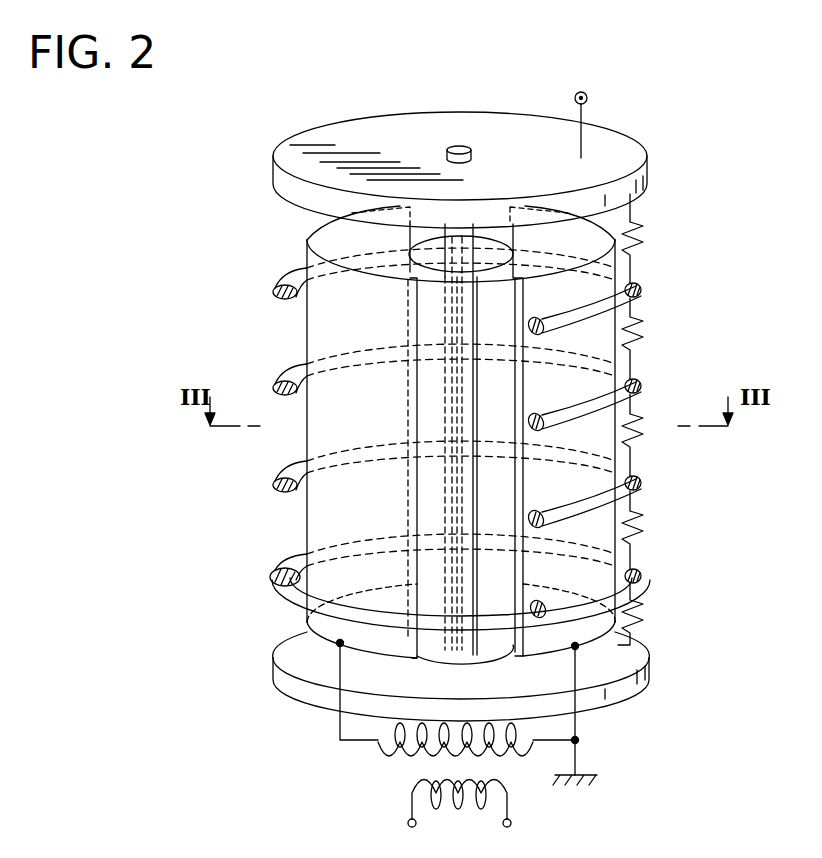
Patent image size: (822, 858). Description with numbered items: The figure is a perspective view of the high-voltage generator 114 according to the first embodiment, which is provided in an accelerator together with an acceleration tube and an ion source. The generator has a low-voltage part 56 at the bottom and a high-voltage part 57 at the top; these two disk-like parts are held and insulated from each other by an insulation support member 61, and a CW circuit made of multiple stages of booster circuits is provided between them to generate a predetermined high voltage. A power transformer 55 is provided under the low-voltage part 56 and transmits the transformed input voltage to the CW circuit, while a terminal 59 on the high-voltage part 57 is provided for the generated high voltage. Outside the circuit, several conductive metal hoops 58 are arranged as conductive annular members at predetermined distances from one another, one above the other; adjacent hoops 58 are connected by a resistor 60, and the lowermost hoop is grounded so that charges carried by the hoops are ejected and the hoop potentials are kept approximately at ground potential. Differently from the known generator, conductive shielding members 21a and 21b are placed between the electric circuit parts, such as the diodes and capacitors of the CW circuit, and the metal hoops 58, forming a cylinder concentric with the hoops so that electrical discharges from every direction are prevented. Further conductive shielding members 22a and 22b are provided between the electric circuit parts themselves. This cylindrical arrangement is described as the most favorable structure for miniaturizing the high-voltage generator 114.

The high-voltage generator 114 is at (517, 96).
The high-voltage part 57 is at (397, 127).
The insulation support member 61 is at (460, 146).
The terminal 59 is at (588, 98).
The conductive shielding member 21a is at (640, 312).
The conductive shielding member 21b is at (305, 335).
The conductive shielding member 22a is at (615, 238).
The conductive shielding member 22b is at (307, 240).
The conductive metal hoop 58 is at (640, 290).
The resistor 60 is at (636, 240).
The low-voltage part 56 is at (313, 666).
The power transformer 55 is at (398, 784).